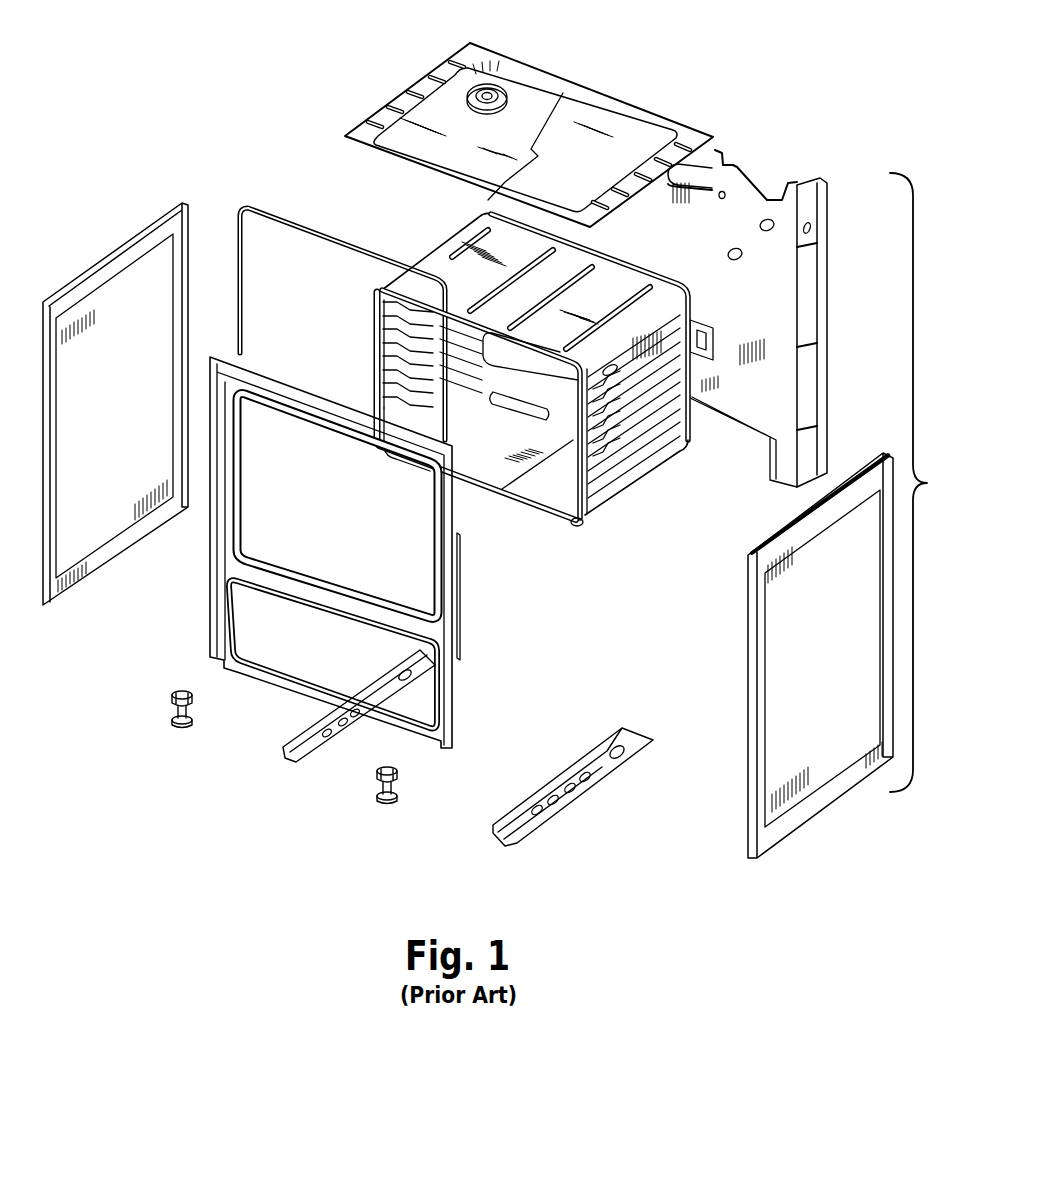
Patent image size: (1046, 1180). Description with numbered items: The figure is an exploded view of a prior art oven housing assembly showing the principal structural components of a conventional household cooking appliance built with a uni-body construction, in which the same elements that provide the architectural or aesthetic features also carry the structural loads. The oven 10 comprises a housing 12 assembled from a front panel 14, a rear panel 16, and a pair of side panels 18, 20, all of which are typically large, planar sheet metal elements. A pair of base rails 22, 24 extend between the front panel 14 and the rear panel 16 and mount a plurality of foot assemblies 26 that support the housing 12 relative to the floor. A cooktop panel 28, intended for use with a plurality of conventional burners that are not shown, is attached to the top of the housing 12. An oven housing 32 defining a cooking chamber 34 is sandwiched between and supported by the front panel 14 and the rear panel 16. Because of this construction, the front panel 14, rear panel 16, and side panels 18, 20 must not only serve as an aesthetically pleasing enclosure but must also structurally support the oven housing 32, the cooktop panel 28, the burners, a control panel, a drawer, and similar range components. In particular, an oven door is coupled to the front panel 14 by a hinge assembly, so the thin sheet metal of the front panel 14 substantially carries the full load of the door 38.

The oven 10 is at (222, 75).
The housing 12 is at (925, 482).
The front panel 14 is at (205, 606).
The rear panel 16 is at (806, 199).
The side panel 18 is at (97, 523).
The side panel 20 is at (810, 753).
The base rail 22 is at (293, 758).
The base rail 24 is at (508, 833).
The foot assembly 26 is at (172, 732).
The cooktop panel 28 is at (571, 107).
The oven housing 32 is at (468, 268).
The cooking chamber 34 is at (506, 442).
The door 38 is at (228, 627).